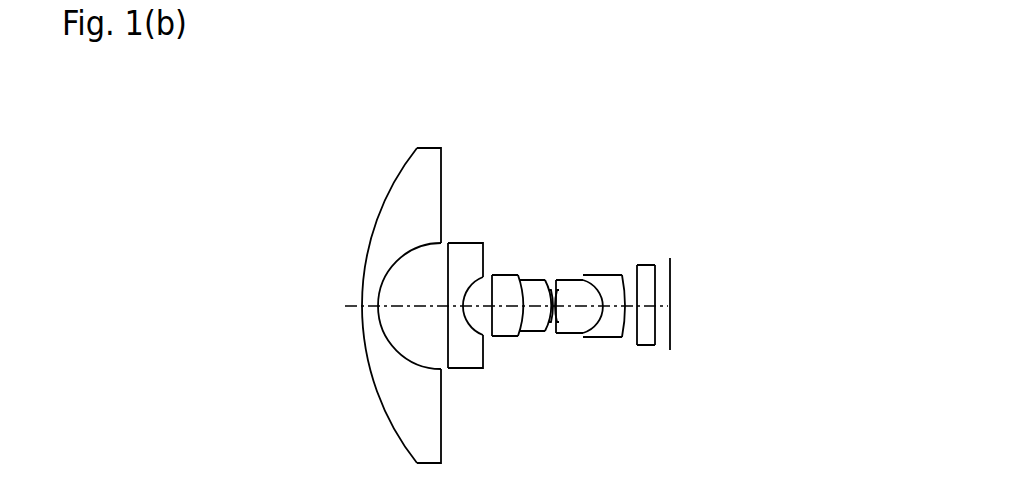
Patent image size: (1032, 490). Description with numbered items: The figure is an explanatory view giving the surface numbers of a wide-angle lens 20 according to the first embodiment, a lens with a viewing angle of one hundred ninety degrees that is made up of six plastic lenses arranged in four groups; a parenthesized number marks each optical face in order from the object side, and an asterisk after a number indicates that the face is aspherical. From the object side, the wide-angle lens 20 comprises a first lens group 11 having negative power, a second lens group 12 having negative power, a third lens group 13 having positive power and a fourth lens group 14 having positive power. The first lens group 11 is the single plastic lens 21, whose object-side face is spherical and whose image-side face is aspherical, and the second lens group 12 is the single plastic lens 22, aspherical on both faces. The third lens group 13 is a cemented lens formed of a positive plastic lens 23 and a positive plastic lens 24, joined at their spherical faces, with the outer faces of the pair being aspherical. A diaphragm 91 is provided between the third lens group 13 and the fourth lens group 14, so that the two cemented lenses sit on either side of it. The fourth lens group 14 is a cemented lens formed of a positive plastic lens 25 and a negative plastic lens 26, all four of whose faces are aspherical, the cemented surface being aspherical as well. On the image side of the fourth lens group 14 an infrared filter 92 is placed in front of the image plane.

The wide-angle lens 20 is at (696, 138).
The first lens group 11 is at (352, 285).
The plastic lens 21 is at (412, 178).
The second lens group 12 is at (411, 275).
The plastic lens 22 is at (467, 243).
The third lens group 13 is at (558, 166).
The plastic lens 23 is at (508, 275).
The plastic lens 24 is at (527, 277).
The diaphragm 91 is at (556, 290).
The fourth lens group 14 is at (672, 166).
The plastic lens 25 is at (577, 279).
The plastic lens 26 is at (608, 275).
The infrared filter 92 is at (647, 265).